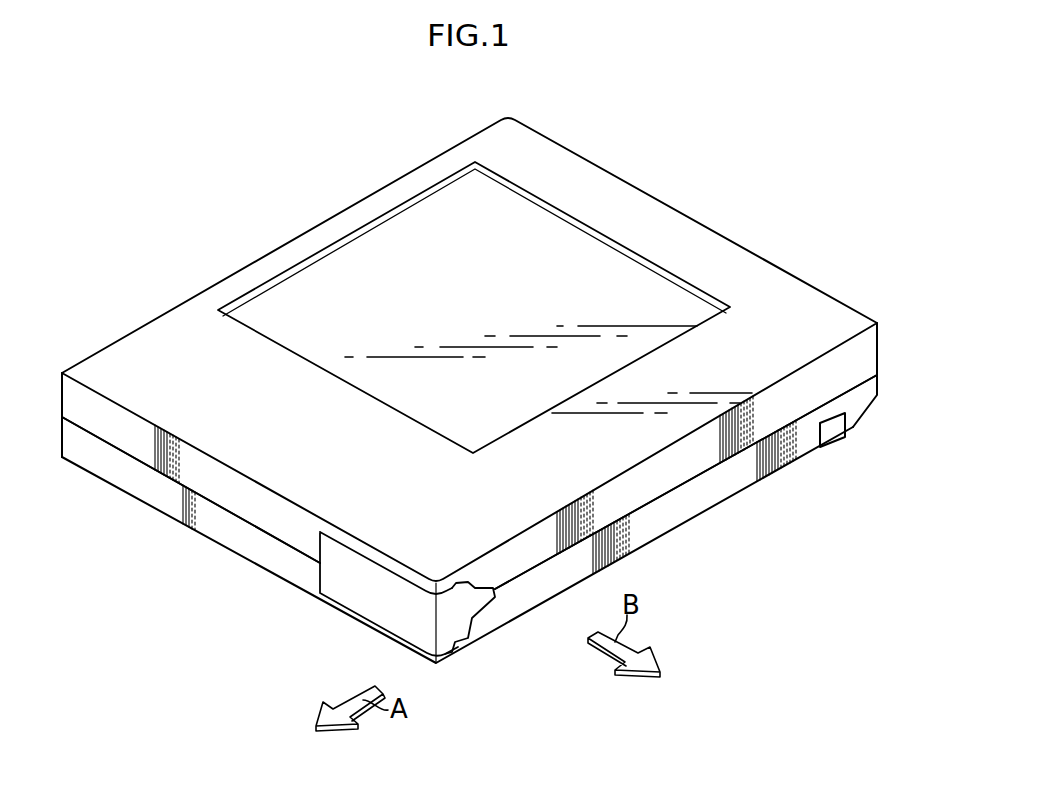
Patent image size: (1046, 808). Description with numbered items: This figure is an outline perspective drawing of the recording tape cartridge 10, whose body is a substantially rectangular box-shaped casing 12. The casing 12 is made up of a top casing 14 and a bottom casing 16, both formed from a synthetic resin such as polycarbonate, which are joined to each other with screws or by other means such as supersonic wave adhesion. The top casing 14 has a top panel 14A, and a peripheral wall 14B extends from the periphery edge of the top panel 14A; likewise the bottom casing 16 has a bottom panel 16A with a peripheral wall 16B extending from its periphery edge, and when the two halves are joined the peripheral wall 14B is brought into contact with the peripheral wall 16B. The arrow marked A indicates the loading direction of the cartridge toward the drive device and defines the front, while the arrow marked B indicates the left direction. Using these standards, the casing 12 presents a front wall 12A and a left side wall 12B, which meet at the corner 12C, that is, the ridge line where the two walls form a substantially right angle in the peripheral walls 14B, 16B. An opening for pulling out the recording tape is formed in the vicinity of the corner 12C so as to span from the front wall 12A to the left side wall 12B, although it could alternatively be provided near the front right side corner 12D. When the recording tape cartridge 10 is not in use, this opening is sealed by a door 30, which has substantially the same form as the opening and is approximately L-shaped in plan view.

The recording tape cartridge 10 is at (703, 108).
The casing 12 is at (890, 218).
The top casing 14 is at (787, 254).
The bottom casing 16 is at (872, 405).
The top panel 14A is at (510, 210).
The peripheral wall 14B is at (243, 502).
The bottom panel 16A is at (748, 489).
The peripheral wall 16B is at (257, 548).
The front wall 12A is at (158, 577).
The left side wall 12B is at (788, 522).
The corner 12C is at (433, 676).
The corner 12D is at (60, 471).
The door 30 is at (382, 613).